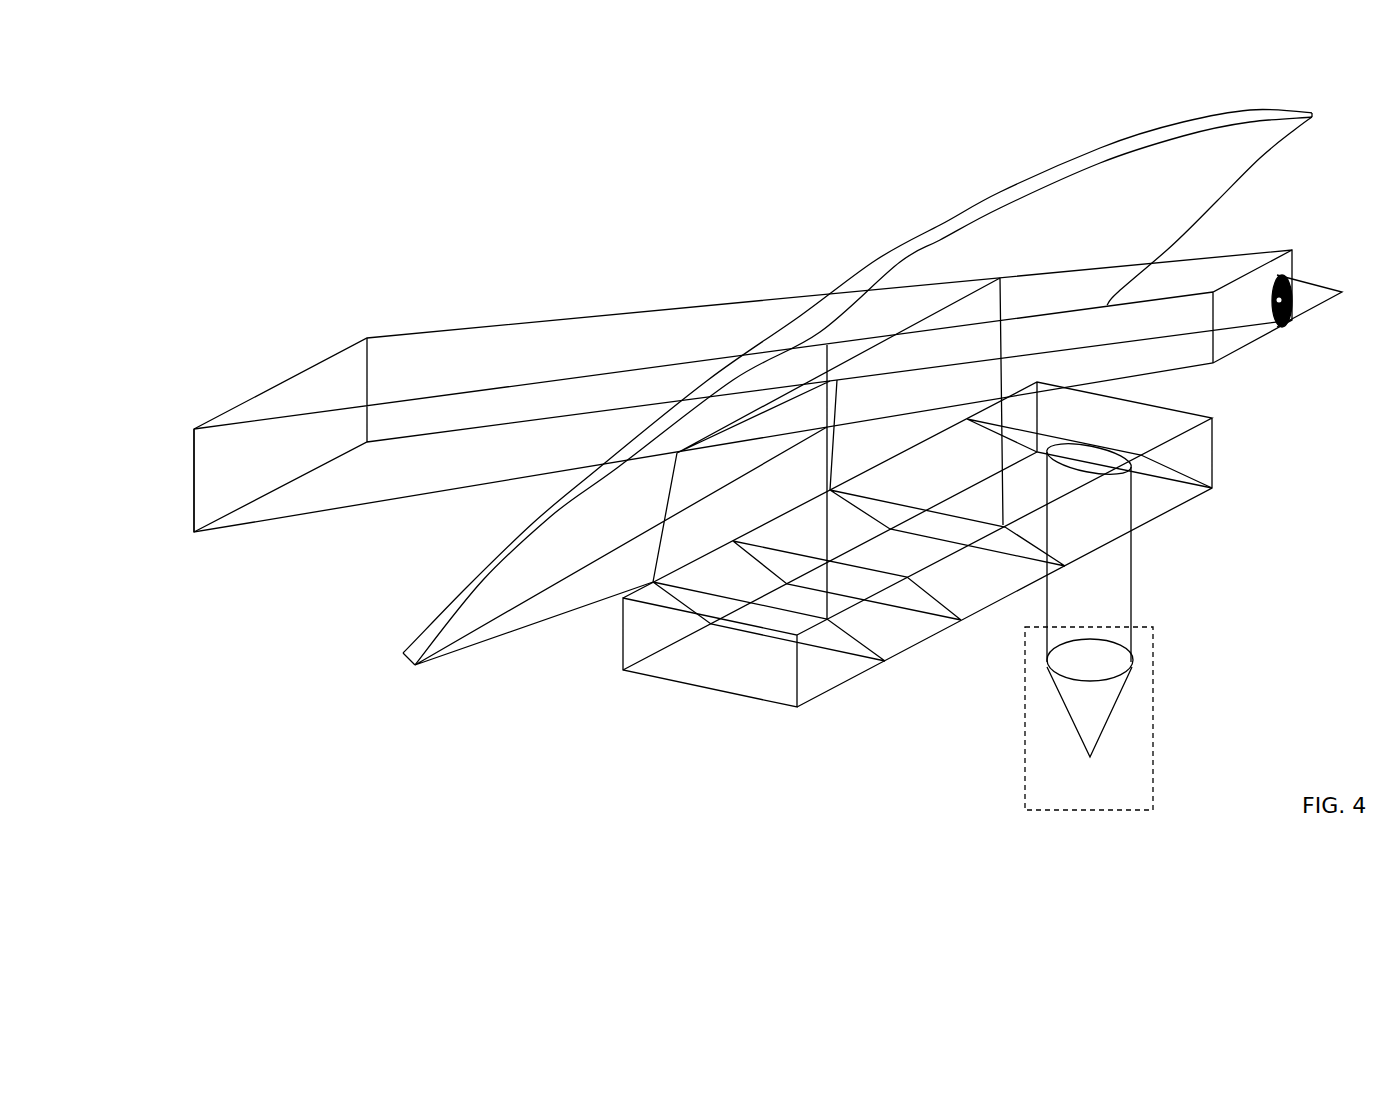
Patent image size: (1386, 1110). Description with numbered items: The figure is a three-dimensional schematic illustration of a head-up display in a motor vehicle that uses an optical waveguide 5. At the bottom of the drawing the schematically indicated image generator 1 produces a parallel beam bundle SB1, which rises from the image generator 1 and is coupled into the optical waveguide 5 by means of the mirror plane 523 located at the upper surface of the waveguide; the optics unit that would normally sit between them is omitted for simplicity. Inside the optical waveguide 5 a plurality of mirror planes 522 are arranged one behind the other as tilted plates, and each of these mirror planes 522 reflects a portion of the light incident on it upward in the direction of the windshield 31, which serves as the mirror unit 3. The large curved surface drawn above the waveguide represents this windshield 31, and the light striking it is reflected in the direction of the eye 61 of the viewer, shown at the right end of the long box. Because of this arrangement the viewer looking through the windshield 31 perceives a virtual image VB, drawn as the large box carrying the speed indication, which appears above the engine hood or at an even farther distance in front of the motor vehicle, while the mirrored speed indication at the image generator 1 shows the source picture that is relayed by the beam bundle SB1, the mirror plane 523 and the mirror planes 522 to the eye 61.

The image generator 1 is at (1153, 660).
The mirror unit 3 is at (857, 387).
The windshield 31 is at (940, 226).
The optical waveguide 5 is at (1213, 457).
The eye 61 is at (1308, 282).
The mirror planes 522 is at (867, 643).
The mirror plane 523 is at (1130, 450).
The parallel beam bundle SB1 is at (1133, 592).
The virtual image VB is at (200, 513).